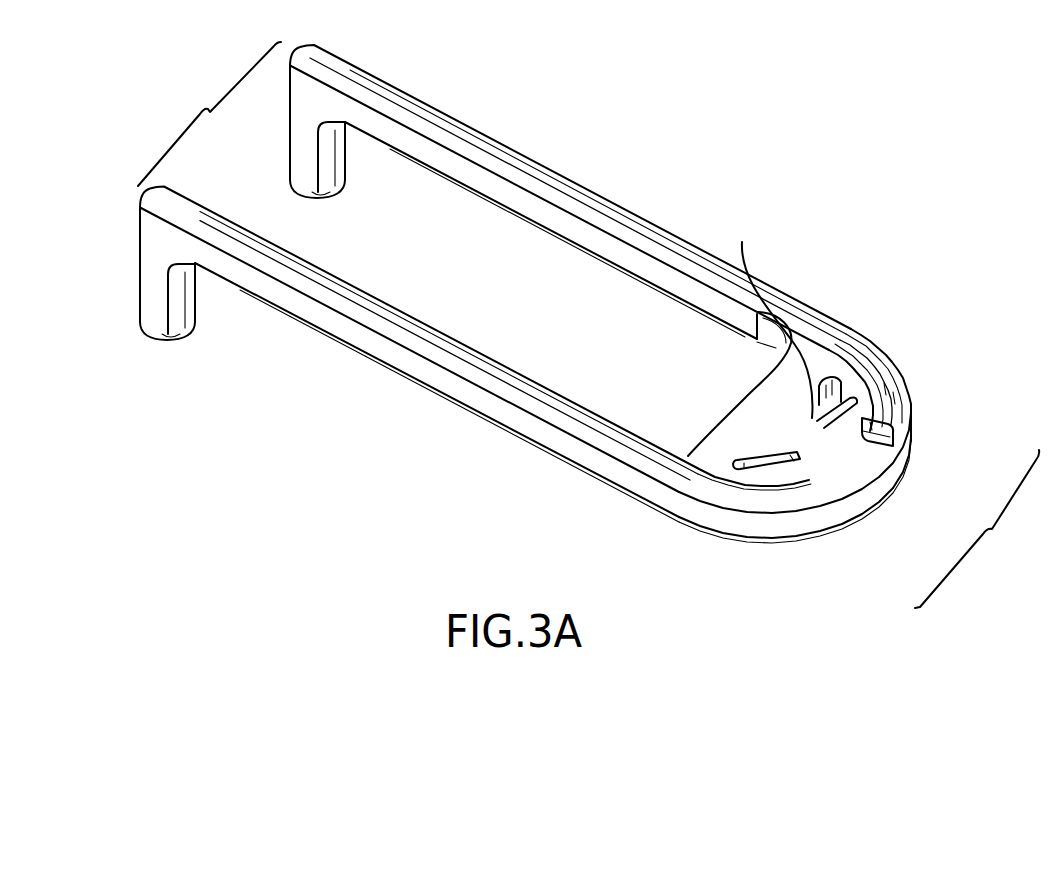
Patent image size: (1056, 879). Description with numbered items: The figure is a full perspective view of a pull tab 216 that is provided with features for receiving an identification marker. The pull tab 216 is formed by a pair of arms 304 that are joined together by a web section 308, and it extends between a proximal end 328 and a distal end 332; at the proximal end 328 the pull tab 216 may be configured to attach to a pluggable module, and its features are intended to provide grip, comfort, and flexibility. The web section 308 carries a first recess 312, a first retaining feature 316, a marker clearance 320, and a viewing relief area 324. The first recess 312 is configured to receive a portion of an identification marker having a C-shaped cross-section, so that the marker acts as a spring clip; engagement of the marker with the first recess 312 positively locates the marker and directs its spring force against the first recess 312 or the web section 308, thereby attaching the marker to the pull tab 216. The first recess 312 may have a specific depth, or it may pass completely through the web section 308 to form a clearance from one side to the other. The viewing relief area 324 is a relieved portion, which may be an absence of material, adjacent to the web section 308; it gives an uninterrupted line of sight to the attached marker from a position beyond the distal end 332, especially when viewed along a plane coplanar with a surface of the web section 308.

The pull tab 216 is at (720, 106).
The arms 304 is at (443, 124).
The web section 308 is at (741, 405).
The first recess 312 is at (816, 422).
The first retaining feature 316 is at (781, 470).
The marker clearance 320 is at (768, 316).
The viewing relief area 324 is at (878, 472).
The proximal end 328 is at (209, 114).
The distal end 332 is at (977, 529).